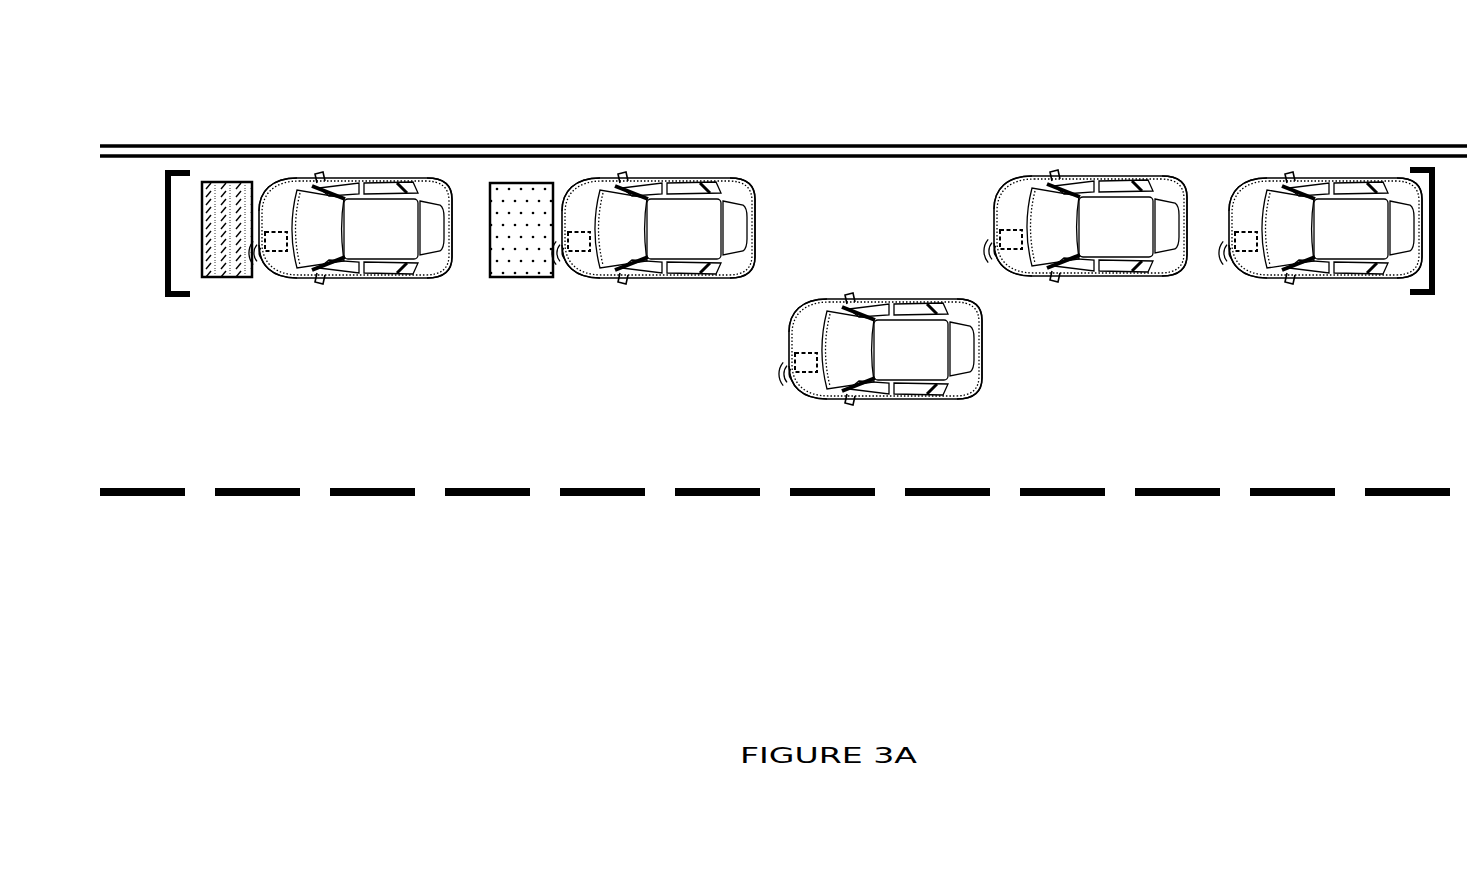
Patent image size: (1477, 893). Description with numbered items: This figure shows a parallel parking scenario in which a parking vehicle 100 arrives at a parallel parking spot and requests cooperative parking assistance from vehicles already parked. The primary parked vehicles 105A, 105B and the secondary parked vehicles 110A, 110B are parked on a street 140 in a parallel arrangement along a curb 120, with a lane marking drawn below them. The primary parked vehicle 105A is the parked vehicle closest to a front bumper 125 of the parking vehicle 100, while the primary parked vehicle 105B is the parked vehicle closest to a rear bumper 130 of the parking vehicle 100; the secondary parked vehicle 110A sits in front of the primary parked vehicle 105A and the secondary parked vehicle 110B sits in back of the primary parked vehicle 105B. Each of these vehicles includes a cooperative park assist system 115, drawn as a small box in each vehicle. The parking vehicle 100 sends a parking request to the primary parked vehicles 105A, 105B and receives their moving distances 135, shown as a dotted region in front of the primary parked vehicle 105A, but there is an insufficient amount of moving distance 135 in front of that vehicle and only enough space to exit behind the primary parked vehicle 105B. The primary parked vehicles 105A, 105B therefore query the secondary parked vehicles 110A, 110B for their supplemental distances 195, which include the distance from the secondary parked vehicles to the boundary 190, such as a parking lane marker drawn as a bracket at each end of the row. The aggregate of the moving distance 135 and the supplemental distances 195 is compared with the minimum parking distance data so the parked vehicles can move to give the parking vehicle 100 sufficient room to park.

The parking vehicle 100 is at (885, 307).
The primary parked vehicle 105A is at (658, 187).
The primary parked vehicle 105B is at (1090, 186).
The secondary parked vehicle 110A is at (355, 187).
The secondary parked vehicle 110B is at (1325, 186).
The cooperative park assist system 115 is at (796, 345).
The curb 120 is at (1460, 145).
The front bumper 125 is at (779, 330).
The rear bumper 130 is at (896, 327).
The moving distance 135 is at (515, 277).
The street 140 is at (1187, 465).
The boundary 190 is at (163, 270).
The supplemental distance 195 is at (230, 277).